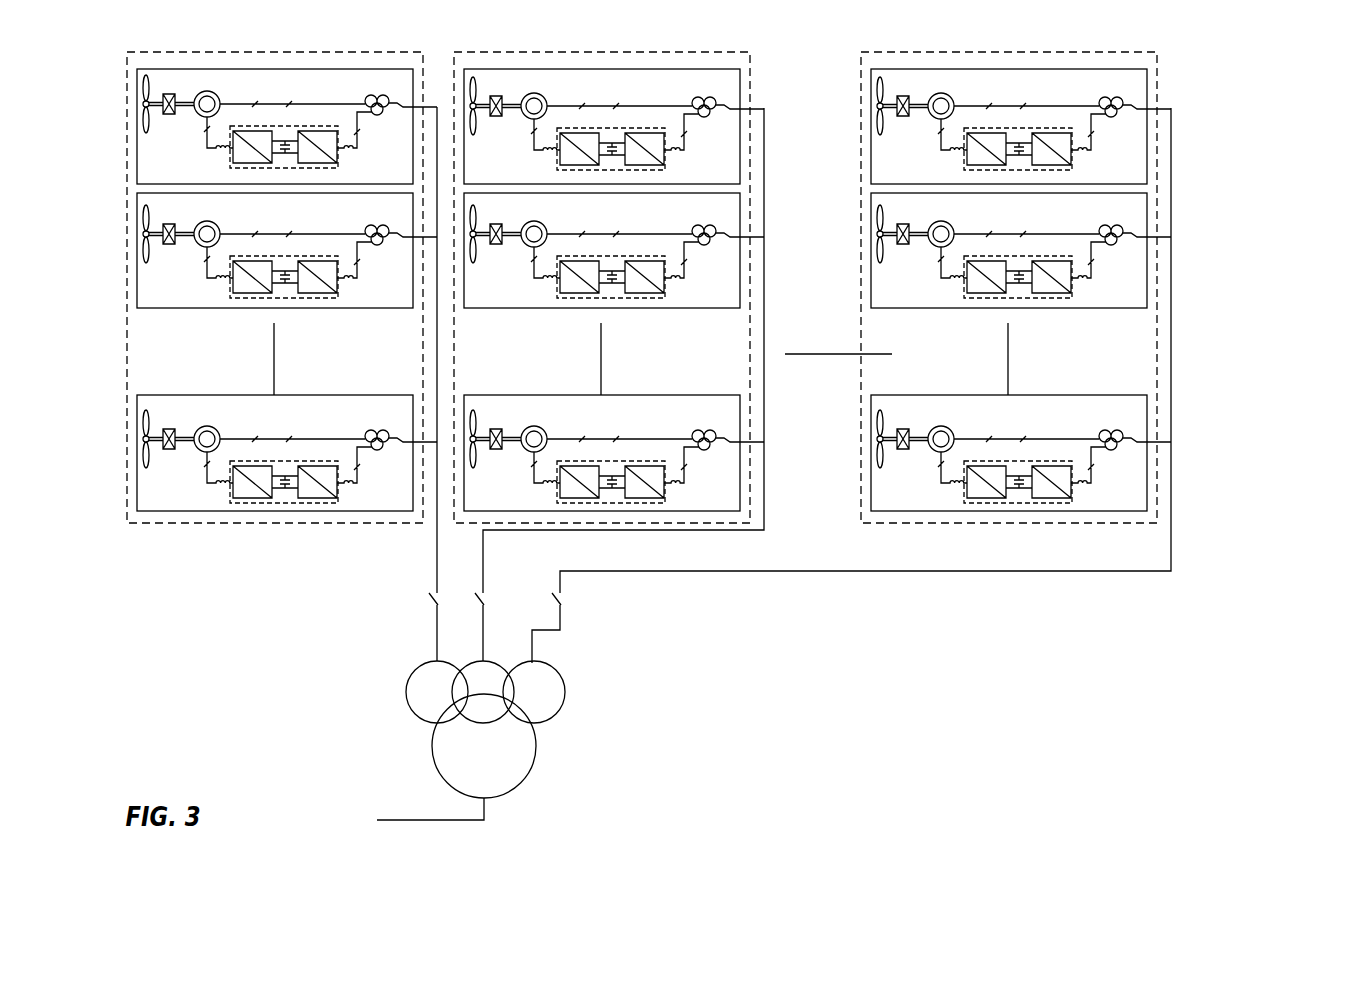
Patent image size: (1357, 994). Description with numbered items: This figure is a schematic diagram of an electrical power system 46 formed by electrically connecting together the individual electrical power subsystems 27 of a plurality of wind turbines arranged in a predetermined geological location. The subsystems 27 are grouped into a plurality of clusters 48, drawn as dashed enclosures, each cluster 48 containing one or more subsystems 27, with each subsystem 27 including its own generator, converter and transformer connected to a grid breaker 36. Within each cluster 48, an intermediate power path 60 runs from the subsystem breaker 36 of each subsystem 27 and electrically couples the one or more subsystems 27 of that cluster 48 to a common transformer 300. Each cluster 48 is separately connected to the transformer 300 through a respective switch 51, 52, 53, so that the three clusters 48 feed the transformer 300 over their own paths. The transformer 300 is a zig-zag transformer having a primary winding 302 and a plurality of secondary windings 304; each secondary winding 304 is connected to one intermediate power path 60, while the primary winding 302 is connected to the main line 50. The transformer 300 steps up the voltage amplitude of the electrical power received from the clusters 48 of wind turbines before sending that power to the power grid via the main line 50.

The electrical power subsystem 27 is at (137, 138).
The grid breaker 36 is at (413, 88).
The electrical power system 46 is at (1275, 110).
The cluster 48 is at (187, 525).
The main line 50 is at (457, 820).
The switch 51 is at (424, 597).
The switch 52 is at (470, 597).
The switch 53 is at (547, 597).
The intermediate power path 60 is at (437, 343).
The transformer 300 is at (550, 770).
The primary winding 302 is at (510, 793).
The secondary winding 304 is at (415, 717).